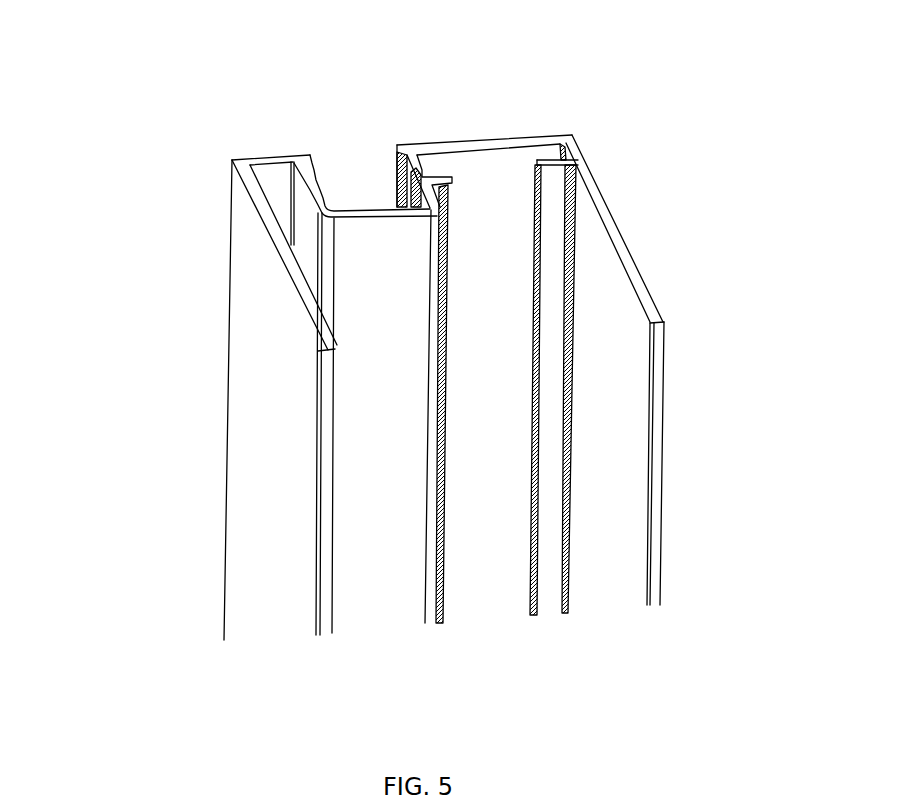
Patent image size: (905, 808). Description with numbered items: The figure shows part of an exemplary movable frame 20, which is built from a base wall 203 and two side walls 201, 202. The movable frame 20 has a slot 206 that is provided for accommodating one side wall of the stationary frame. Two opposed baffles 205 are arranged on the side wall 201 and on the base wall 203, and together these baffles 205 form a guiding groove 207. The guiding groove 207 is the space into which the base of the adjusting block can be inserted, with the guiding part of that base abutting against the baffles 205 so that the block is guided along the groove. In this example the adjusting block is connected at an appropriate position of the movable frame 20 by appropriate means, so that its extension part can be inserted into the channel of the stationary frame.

The movable frame 20 is at (440, 373).
The side wall 201 is at (622, 270).
The side wall 202 is at (262, 352).
The base wall 203 is at (478, 136).
The baffles 205 is at (452, 182).
The slot 206 is at (271, 183).
The guiding groove 207 is at (520, 157).